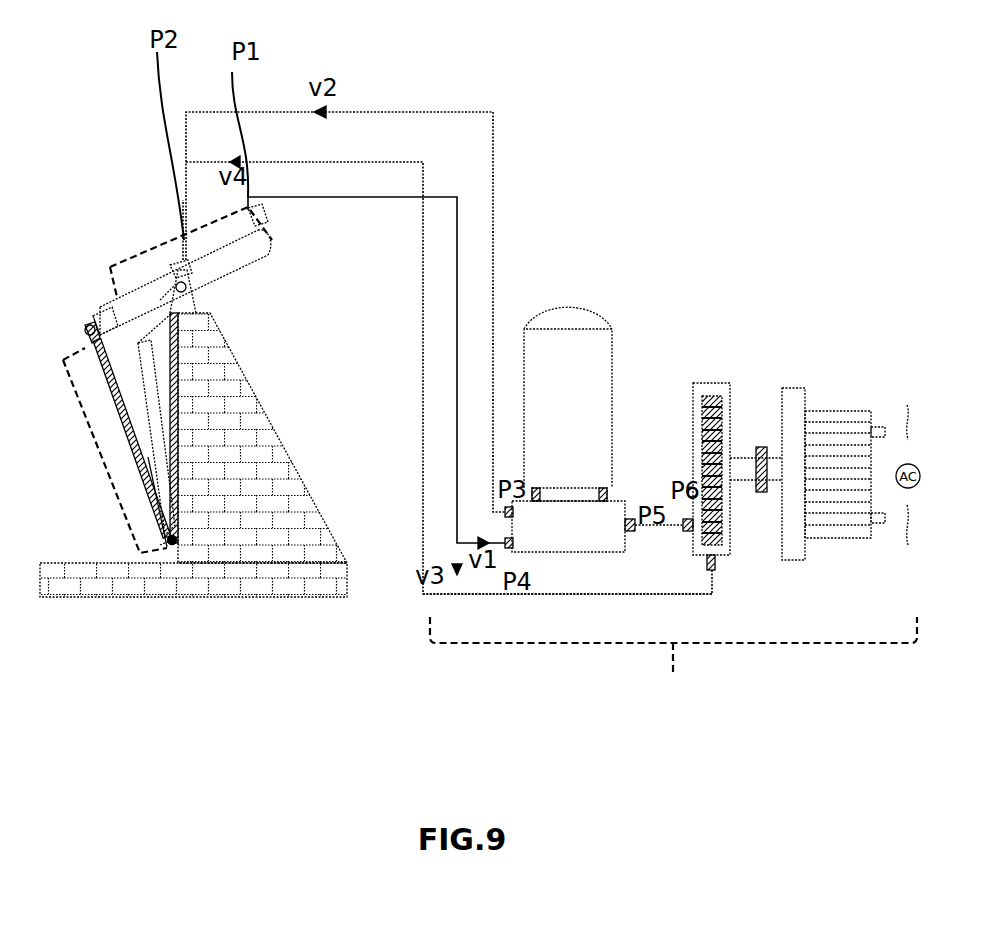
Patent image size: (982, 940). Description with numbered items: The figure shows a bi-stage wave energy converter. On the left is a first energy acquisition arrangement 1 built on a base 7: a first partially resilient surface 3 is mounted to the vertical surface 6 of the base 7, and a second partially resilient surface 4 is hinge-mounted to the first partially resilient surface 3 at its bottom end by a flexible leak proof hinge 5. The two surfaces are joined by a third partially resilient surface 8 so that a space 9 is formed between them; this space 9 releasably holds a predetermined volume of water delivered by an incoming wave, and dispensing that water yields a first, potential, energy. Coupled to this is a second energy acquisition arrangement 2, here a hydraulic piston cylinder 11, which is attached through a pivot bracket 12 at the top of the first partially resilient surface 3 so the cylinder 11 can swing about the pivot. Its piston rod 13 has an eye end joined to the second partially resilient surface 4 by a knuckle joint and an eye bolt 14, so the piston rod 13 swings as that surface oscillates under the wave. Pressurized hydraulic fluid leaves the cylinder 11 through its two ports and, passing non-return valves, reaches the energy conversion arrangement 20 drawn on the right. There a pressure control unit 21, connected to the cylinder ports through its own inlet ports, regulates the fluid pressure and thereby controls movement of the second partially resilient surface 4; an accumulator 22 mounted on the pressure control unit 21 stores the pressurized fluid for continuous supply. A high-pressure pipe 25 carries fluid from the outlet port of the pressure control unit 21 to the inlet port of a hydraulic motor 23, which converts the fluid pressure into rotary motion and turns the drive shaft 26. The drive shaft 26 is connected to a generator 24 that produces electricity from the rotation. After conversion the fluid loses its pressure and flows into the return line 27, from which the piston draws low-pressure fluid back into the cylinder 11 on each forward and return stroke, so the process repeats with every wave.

The first energy acquisition arrangement 1 is at (100, 464).
The second energy acquisition arrangement 2 is at (178, 238).
The first partially resilient surface 3 is at (170, 297).
The second partially resilient surface 4 is at (103, 367).
The flexible leak proof hinge 5 is at (167, 553).
The vertical surface 6 is at (183, 425).
The base 7 is at (215, 568).
The third partially resilient surface 8 is at (140, 343).
The space 9 is at (168, 553).
The hydraulic piston cylinder 11 is at (213, 263).
The pivot bracket 12 is at (177, 295).
The piston rod 13 is at (132, 310).
The eye bolt 14 is at (93, 323).
The energy conversion arrangement 20 is at (673, 659).
The pressure control unit 21 is at (603, 530).
The accumulator 22 is at (573, 390).
The hydraulic motor 23 is at (712, 420).
The generator 24 is at (835, 437).
The high-pressure pipe 25 is at (665, 525).
The drive shaft 26 is at (745, 470).
The return line 27 is at (556, 585).